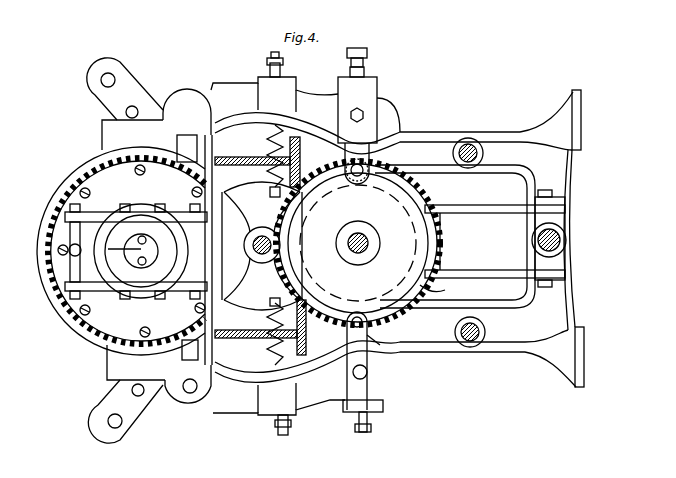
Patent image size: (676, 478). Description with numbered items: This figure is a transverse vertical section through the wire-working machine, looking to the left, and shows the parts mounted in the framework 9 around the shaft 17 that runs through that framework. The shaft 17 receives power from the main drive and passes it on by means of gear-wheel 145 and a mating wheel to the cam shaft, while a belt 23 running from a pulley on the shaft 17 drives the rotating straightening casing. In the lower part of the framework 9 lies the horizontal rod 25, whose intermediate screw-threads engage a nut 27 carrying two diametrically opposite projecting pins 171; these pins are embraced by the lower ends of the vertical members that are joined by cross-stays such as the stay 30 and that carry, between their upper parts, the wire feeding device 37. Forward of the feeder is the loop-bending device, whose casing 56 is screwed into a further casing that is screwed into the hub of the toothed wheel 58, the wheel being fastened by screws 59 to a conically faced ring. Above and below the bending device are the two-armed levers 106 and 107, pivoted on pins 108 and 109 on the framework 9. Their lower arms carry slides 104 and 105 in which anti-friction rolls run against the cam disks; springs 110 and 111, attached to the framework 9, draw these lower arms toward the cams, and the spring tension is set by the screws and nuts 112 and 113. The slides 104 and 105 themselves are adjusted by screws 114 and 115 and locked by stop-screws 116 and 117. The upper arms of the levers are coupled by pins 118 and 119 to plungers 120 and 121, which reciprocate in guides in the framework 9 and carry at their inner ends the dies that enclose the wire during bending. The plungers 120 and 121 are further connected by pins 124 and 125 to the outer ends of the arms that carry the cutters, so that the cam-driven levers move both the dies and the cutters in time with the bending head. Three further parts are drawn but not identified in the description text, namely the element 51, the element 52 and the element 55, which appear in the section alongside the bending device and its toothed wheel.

The framework 9 is at (532, 338).
The shaft 17 is at (262, 236).
The belt 23 is at (482, 213).
The horizontal rod 25 is at (540, 248).
The nut 27 is at (538, 222).
The cross-stay 30 is at (205, 215).
The feeding device 37 is at (125, 265).
The screws 51 is at (65, 228).
The link 52 is at (75, 252).
The gear wheel 55 is at (385, 199).
The casing 56 is at (362, 242).
The toothed wheel 58 is at (110, 180).
The screws 59 is at (72, 177).
The slide 104 is at (362, 160).
The slide 105 is at (374, 352).
The two-armed lever 106 is at (228, 100).
The two-armed lever 107 is at (244, 395).
The pin 108 is at (188, 105).
The pin 109 is at (190, 395).
The spring 110 is at (268, 141).
The spring 111 is at (268, 352).
The screw and nut 112 is at (284, 62).
The screw and nut 113 is at (288, 426).
The screw 114 is at (367, 52).
The screw 115 is at (372, 428).
The stop-screw 116 is at (366, 112).
The stop-screw 117 is at (357, 378).
The pin 118 is at (134, 108).
The pin 119 is at (132, 390).
The plunger 120 is at (122, 82).
The plunger 121 is at (118, 410).
The pin 124 is at (104, 78).
The pin 125 is at (110, 424).
The gear-wheel 145 is at (425, 291).
The projecting pins 171 is at (538, 195).